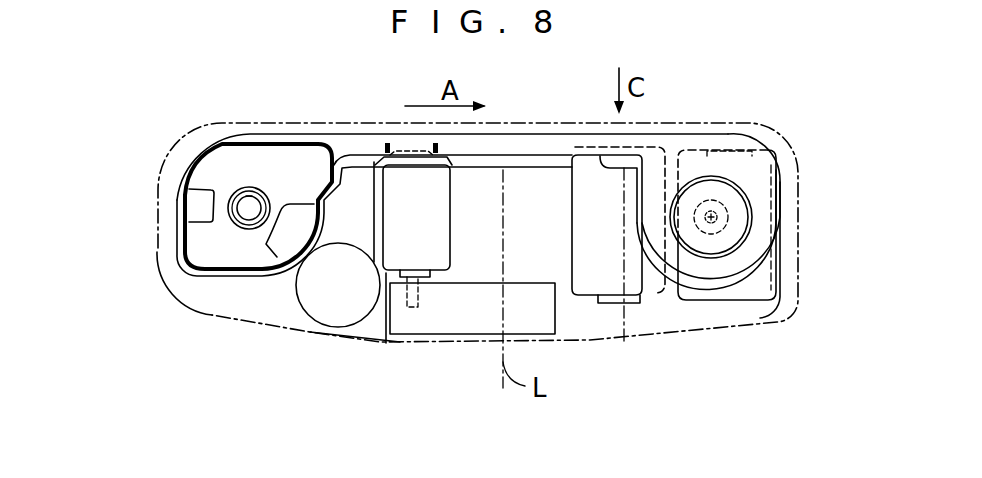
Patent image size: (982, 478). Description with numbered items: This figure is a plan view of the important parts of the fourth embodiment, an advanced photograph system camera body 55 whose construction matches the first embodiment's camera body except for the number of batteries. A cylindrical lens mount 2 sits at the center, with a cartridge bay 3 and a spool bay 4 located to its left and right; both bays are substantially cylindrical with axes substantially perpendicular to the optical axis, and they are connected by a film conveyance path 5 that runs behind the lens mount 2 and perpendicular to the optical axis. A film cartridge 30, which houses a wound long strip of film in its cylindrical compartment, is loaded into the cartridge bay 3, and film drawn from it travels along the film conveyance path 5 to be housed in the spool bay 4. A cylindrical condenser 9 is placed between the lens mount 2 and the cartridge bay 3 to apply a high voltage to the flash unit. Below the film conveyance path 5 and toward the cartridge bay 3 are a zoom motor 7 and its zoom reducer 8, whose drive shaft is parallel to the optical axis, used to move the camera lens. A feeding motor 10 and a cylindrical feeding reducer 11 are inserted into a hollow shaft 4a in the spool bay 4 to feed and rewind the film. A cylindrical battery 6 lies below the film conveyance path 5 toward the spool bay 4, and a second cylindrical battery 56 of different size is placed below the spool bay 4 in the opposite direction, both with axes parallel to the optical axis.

The advanced photograph system camera body 55 is at (94, 194).
The film conveyance path 5 is at (534, 133).
The cartridge bay 3 is at (177, 250).
The film cartridge 30 is at (247, 160).
The condenser 9 is at (330, 313).
The zoom motor 7 is at (437, 217).
The zoom reducer 8 is at (432, 335).
The lens mount 2 is at (597, 343).
The battery 6 is at (653, 291).
The battery 56 is at (708, 302).
The spool bay 4 is at (775, 252).
The hollow shaft 4a is at (740, 255).
The feeding reducer 11 is at (742, 191).
The feeding motor 10 is at (733, 216).